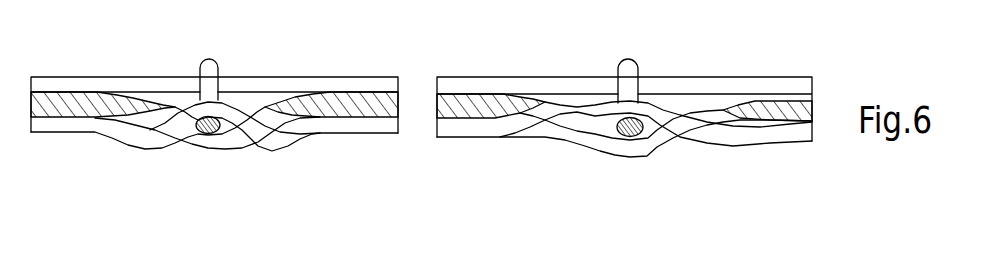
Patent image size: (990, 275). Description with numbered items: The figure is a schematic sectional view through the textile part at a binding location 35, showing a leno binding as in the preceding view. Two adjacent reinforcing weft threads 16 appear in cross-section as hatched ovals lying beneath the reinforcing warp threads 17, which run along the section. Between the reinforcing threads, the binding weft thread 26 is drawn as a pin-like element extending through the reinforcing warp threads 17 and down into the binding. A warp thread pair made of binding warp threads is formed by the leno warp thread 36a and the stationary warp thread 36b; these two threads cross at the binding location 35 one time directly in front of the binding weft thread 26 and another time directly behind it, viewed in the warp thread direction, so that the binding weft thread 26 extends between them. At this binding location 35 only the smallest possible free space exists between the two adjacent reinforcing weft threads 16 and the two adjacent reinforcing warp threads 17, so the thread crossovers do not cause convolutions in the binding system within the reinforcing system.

The reinforcing weft thread 16 is at (445, 171).
The reinforcing warp thread 17 is at (421, 74).
The binding weft thread 26 is at (464, 54).
The binding location 35 is at (419, 186).
The leno warp thread 36a is at (421, 169).
The stationary warp thread 36b is at (481, 179).